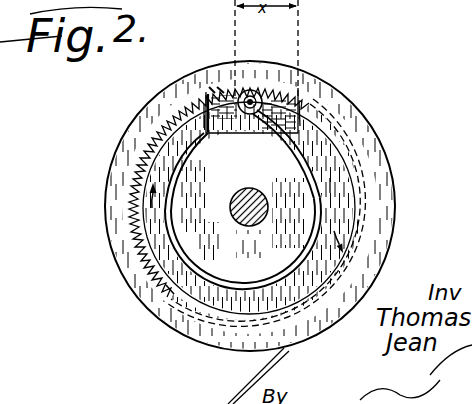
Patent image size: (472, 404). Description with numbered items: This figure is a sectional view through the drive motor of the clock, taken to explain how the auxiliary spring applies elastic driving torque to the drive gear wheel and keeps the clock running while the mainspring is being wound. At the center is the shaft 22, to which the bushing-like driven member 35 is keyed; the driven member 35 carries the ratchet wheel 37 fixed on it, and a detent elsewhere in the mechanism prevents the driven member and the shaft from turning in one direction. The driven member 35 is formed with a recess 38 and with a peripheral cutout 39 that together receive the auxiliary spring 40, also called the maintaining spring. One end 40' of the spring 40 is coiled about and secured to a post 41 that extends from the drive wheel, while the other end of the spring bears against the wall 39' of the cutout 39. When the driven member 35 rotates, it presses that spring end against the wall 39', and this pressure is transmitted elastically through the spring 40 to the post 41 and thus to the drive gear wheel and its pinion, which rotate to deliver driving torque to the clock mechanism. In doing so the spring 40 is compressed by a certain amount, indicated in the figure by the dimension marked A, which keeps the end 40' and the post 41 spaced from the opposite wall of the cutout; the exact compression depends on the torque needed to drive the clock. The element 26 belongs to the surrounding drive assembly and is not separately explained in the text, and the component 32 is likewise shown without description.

The shaft 22 is at (259, 189).
The operating rod 26 is at (240, 392).
The housing 32 is at (346, 107).
The driven member 35 is at (178, 287).
The ratchet wheel 37 is at (140, 250).
The recess 38 is at (331, 183).
The peripheral cutout 39 is at (252, 127).
The wall of the cutout 39' is at (145, 110).
The auxiliary spring 40 is at (235, 199).
The end of the spring 40' is at (202, 54).
The post 41 is at (260, 100).